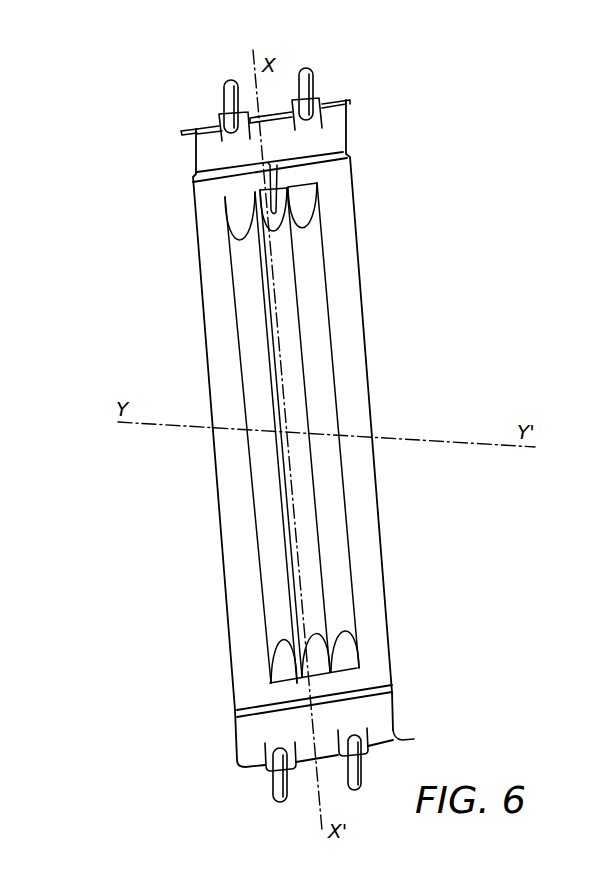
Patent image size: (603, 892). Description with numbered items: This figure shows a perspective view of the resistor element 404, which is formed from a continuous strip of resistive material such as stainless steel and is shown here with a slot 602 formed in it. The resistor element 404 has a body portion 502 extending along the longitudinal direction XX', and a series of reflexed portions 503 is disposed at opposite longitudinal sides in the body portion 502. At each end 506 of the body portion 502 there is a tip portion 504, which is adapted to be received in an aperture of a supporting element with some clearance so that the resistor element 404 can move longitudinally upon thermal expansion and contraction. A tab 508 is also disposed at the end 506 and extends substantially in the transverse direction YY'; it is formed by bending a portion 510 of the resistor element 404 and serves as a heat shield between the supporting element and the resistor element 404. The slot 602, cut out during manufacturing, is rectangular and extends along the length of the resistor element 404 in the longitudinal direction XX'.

The resistor element 404 is at (460, 133).
The body portion 502 is at (348, 368).
The reflexed portions 503 is at (310, 295).
The tip portion 504 is at (224, 84).
The end 506 is at (192, 186).
The tab 508 is at (181, 131).
The bent portion 510 is at (393, 728).
The slot 602 is at (268, 178).